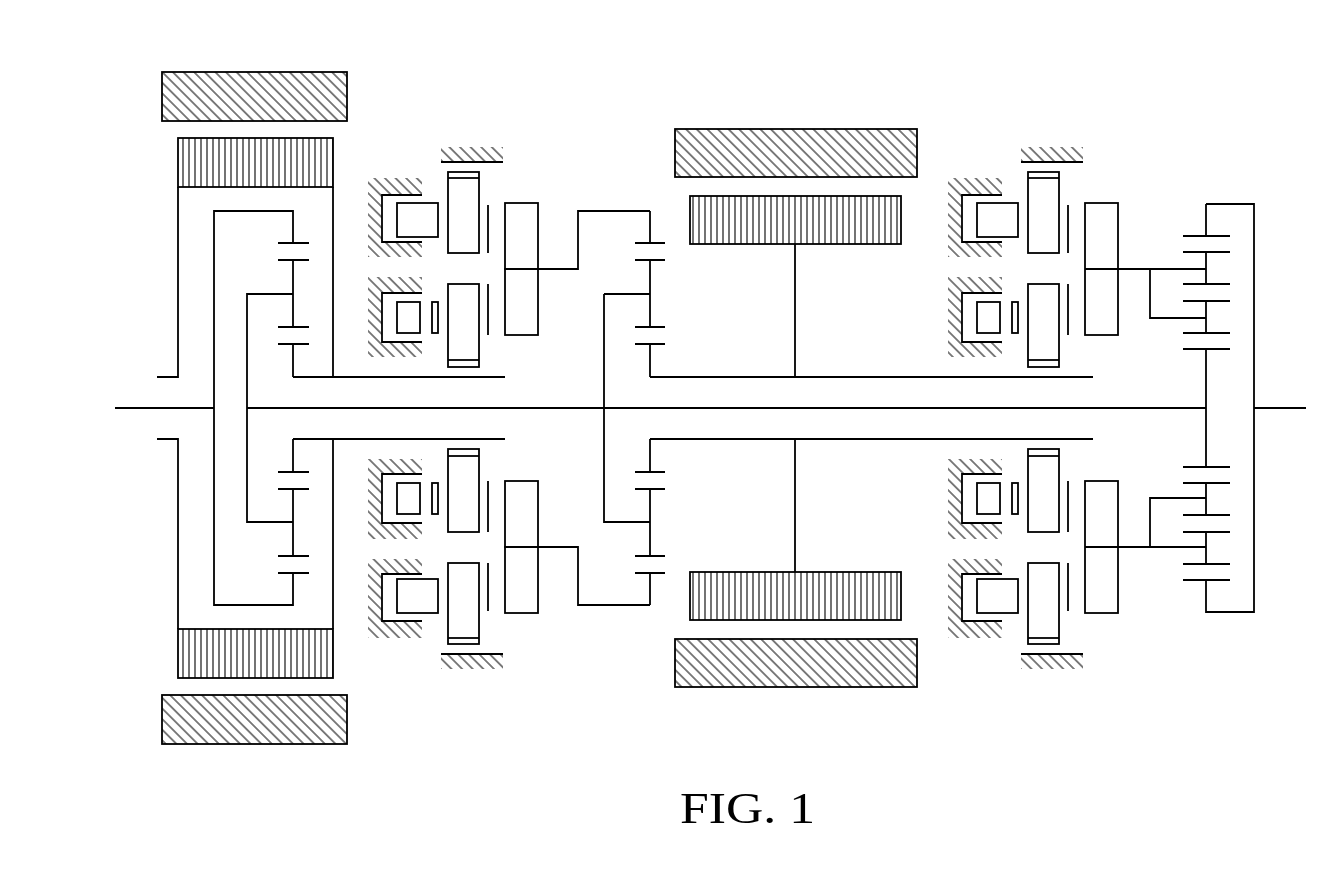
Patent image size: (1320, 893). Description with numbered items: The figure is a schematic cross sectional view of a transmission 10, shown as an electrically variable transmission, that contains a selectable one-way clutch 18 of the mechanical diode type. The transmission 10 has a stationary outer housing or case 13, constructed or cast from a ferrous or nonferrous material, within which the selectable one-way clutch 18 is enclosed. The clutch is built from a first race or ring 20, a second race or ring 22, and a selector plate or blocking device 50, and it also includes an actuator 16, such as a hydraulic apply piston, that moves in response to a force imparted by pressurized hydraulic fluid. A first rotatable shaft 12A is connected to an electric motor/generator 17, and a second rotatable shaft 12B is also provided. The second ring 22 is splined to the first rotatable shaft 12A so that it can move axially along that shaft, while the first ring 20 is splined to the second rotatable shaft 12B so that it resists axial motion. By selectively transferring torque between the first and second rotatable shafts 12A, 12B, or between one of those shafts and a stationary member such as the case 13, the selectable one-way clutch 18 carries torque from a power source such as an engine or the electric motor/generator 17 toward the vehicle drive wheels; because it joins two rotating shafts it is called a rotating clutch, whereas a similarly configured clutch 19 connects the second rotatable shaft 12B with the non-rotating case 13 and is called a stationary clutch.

The transmission 10 is at (710, 376).
The first rotatable shaft 12A is at (488, 381).
The second rotatable shaft 12B is at (555, 266).
The case 13 is at (473, 146).
The actuator 16 is at (408, 326).
The electric motor/generator 17 is at (353, 133).
The selectable one-way clutch 18 is at (547, 344).
The clutch 19 is at (504, 182).
The first ring 20 is at (533, 299).
The second ring 22 is at (463, 354).
The blocking device 50 is at (489, 338).